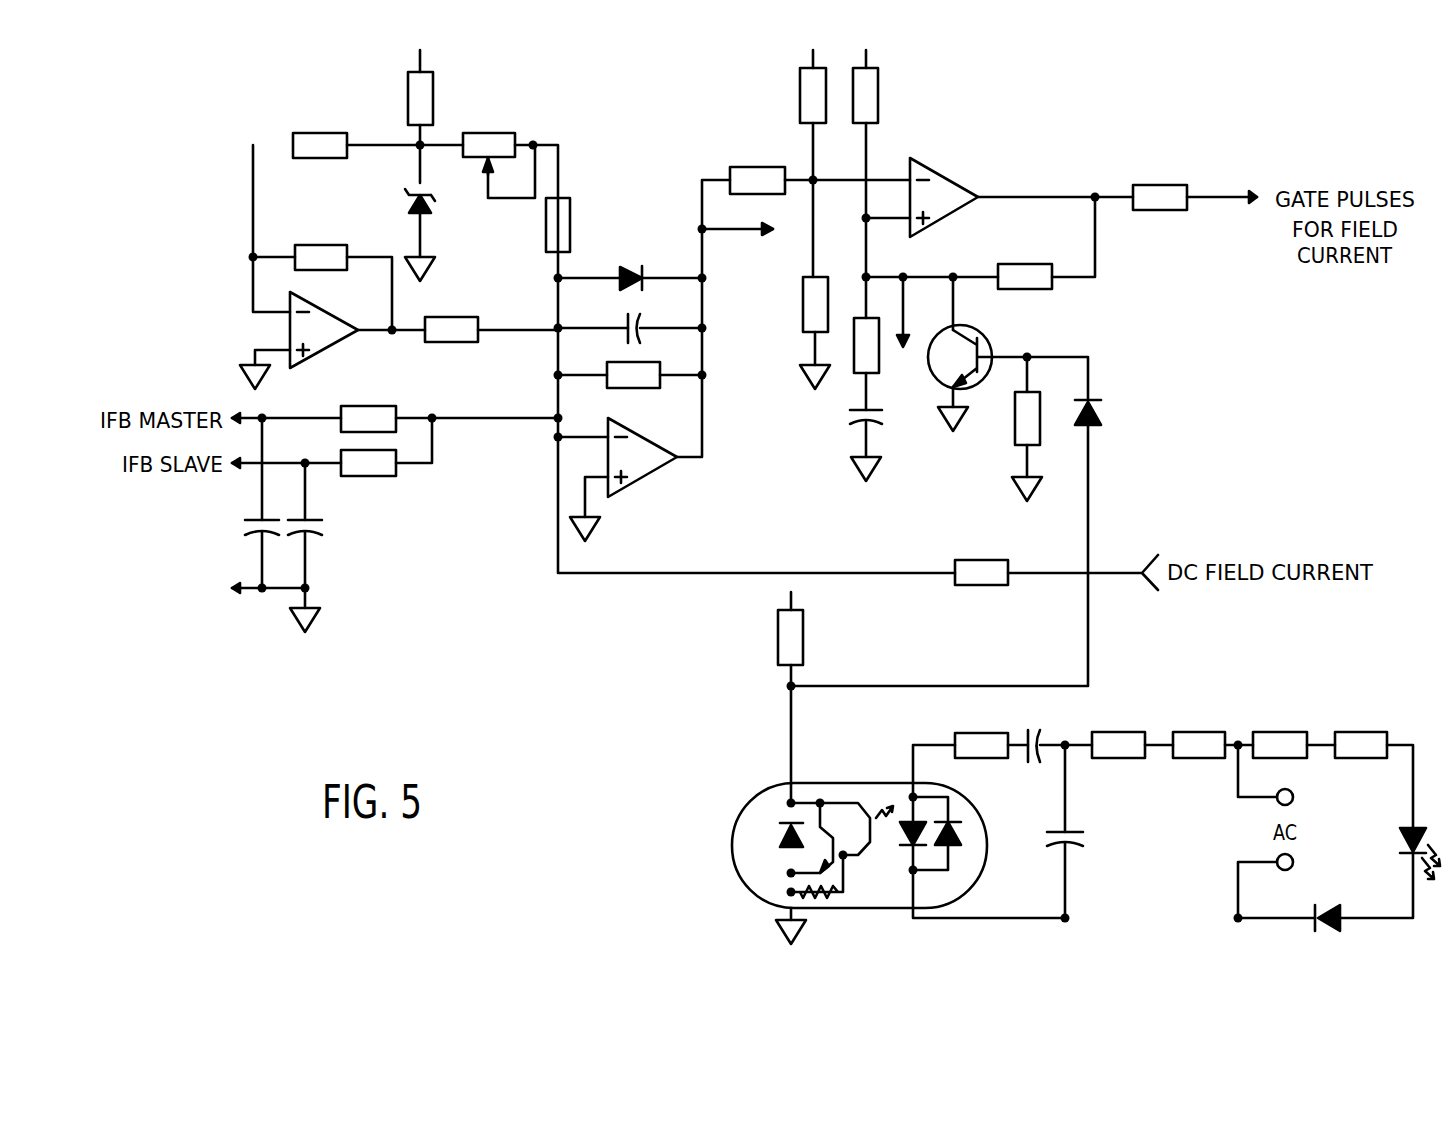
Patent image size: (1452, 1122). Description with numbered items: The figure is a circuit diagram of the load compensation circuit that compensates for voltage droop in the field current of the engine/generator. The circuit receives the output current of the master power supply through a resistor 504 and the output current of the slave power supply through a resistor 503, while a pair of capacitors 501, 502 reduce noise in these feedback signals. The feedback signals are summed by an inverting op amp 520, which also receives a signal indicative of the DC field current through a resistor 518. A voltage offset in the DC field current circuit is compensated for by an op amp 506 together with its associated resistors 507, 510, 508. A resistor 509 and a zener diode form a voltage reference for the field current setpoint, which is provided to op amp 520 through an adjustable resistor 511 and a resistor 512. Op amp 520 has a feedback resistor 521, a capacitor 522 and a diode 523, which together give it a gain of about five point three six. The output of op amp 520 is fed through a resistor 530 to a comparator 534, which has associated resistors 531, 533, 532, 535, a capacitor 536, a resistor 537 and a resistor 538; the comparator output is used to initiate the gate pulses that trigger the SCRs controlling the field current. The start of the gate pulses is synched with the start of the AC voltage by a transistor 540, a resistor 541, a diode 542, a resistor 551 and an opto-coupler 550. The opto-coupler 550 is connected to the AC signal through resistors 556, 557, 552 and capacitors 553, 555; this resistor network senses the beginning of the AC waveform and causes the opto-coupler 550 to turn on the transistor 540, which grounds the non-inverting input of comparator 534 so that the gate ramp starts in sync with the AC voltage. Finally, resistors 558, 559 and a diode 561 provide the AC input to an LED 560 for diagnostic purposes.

The capacitor 501 is at (246, 518).
The capacitor 502 is at (313, 521).
The resistor 503 is at (373, 477).
The resistor 504 is at (362, 406).
The op amp 506 is at (328, 343).
The resistor 507 is at (322, 243).
The resistor 508 is at (320, 131).
The resistor 509 is at (434, 98).
The resistor 510 is at (447, 317).
The adjustable resistor 511 is at (505, 132).
The resistor 512 is at (571, 223).
The resistor 518 is at (980, 586).
The op amp 520 is at (643, 480).
The feedback resistor 521 is at (635, 390).
The capacitor 522 is at (642, 322).
The diode 523 is at (630, 264).
The resistor 530 is at (753, 167).
The resistor 531 is at (800, 98).
The resistor 532 is at (878, 97).
The resistor 533 is at (803, 298).
The comparator 534 is at (982, 172).
The resistor 535 is at (879, 352).
The capacitor 536 is at (855, 427).
The resistor 537 is at (1027, 263).
The resistor 538 is at (1160, 183).
The transistor 540 is at (983, 333).
The resistor 541 is at (1013, 420).
The diode 542 is at (1098, 413).
The opto-coupler 550 is at (762, 788).
The resistor 551 is at (804, 633).
The resistor 552 is at (980, 732).
The capacitor 553 is at (1045, 735).
The capacitor 555 is at (1075, 830).
The resistor 556 is at (1117, 732).
The resistor 557 is at (1195, 732).
The resistor 558 is at (1280, 732).
The resistor 559 is at (1365, 732).
The LED 560 is at (1405, 832).
The diode 561 is at (1320, 908).